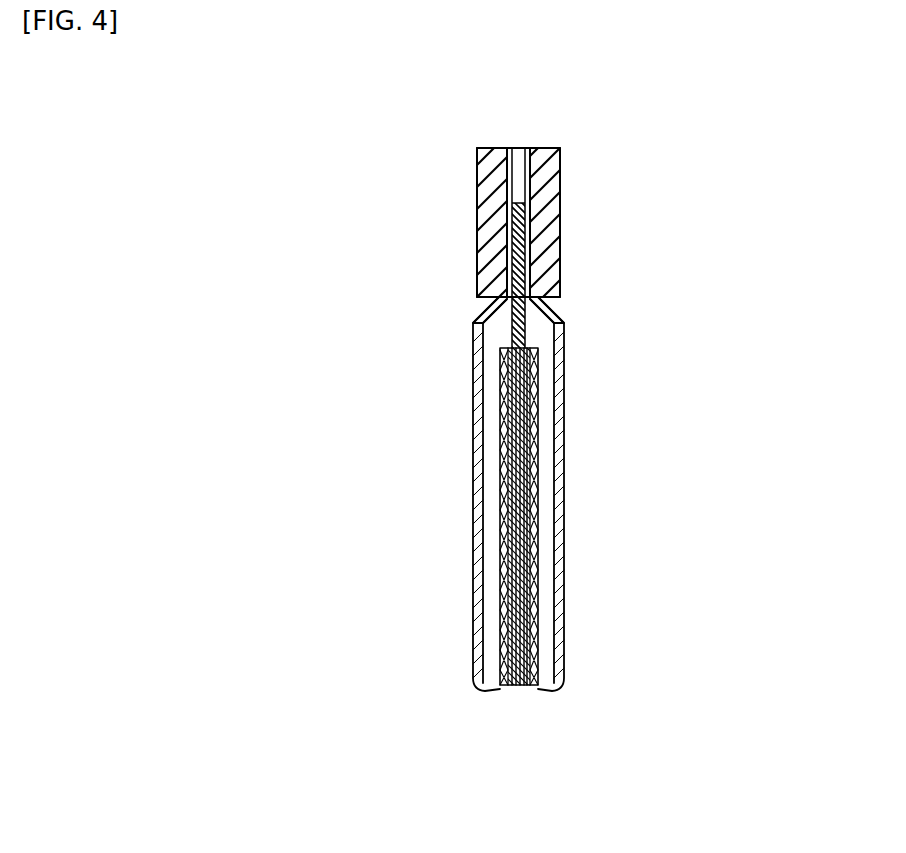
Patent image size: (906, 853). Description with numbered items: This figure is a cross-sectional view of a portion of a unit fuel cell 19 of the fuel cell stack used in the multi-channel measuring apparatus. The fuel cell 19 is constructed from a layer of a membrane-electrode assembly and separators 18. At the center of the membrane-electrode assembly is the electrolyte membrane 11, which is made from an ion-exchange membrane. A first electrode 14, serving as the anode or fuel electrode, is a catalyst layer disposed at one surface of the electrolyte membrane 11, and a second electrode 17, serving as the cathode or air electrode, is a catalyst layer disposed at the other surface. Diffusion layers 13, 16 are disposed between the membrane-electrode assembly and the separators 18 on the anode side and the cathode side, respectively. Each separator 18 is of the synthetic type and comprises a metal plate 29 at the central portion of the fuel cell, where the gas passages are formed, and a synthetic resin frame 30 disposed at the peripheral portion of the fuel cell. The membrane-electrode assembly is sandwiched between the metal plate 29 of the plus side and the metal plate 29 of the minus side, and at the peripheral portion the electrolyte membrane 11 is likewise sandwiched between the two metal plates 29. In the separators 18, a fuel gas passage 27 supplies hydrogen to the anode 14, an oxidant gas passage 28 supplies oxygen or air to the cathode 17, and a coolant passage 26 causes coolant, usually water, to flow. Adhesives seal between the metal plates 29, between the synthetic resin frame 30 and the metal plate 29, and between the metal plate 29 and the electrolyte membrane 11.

The electrolyte membrane 11 is at (520, 690).
The diffusion layer 13 is at (478, 668).
The first electrode 14 is at (500, 690).
The diffusion layer 16 is at (533, 665).
The second electrode 17 is at (530, 690).
The separator 18 is at (520, 107).
The fuel cell 19 is at (566, 355).
The coolant passage 26 is at (493, 302).
The fuel gas passage 27 is at (483, 460).
The oxidant gas passage 28 is at (554, 458).
The metal plate 29 is at (507, 152).
The synthetic resin frame 30 is at (477, 163).